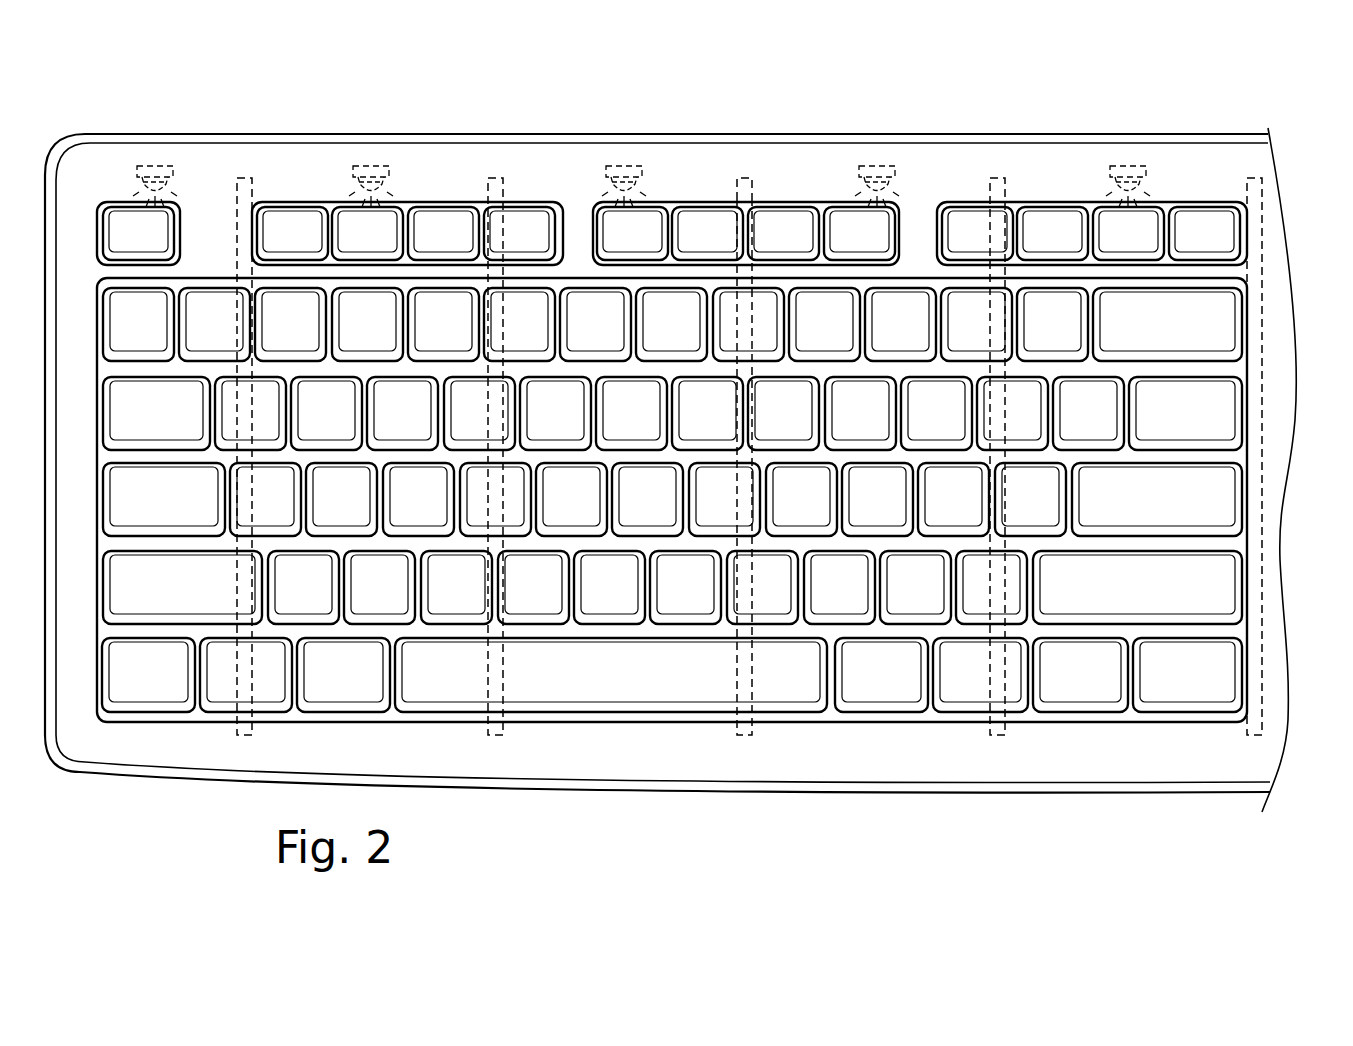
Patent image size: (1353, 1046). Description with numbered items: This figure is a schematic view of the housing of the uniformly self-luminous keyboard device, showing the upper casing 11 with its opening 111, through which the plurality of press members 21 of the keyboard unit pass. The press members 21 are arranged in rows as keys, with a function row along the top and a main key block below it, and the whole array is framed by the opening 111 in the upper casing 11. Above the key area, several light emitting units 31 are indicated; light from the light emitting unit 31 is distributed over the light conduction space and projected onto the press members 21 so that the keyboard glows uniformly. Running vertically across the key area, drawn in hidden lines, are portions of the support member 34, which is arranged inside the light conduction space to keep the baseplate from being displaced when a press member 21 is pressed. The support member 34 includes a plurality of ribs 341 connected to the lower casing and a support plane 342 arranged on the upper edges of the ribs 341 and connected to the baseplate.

The upper casing 11 is at (1155, 758).
The opening 111 is at (1213, 286).
The press members 21 is at (1222, 482).
The light emitting unit 31 is at (1128, 165).
The support member 34 is at (749, 408).
The ribs 341 is at (757, 270).
The support plane 342 is at (738, 178).